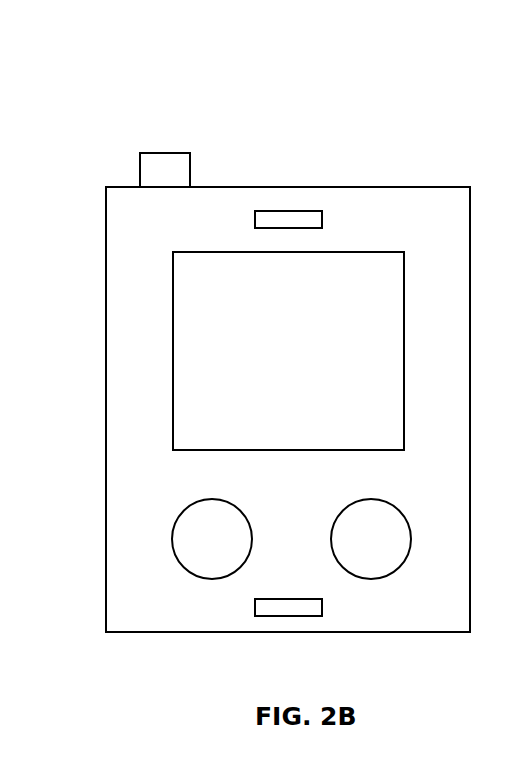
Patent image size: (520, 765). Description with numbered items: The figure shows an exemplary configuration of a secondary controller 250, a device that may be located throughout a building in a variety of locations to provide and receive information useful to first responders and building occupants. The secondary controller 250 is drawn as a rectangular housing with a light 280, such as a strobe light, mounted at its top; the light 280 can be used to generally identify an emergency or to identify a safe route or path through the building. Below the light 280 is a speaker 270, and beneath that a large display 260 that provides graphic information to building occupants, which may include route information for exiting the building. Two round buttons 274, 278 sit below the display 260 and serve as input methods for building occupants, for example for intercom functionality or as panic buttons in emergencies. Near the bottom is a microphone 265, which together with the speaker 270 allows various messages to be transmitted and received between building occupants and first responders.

The secondary controller 250 is at (74, 116).
The light 280 is at (190, 168).
The speaker 270 is at (310, 211).
The display 260 is at (405, 367).
The button 274 is at (246, 518).
The button 278 is at (405, 518).
The microphone 265 is at (321, 616).